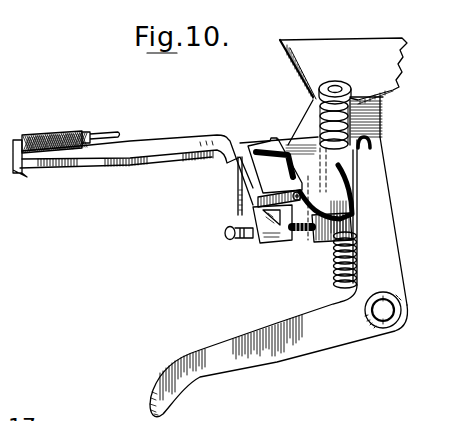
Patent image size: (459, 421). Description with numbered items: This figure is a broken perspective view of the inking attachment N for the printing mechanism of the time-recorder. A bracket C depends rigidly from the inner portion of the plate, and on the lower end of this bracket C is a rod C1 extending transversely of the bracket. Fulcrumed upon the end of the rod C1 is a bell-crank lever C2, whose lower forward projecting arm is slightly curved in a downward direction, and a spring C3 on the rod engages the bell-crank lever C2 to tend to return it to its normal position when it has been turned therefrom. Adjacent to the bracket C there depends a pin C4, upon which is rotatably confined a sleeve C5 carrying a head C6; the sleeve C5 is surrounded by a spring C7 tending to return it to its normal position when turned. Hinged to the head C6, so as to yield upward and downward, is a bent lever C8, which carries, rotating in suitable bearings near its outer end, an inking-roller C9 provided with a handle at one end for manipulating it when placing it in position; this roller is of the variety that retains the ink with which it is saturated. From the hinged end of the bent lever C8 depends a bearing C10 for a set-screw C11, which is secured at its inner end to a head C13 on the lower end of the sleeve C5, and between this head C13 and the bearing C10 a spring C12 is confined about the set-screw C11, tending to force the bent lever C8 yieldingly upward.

The bracket C is at (383, 139).
The rod C1 is at (388, 310).
The bell-crank lever C2 is at (396, 283).
The spring C3 is at (343, 270).
The pin C4 is at (334, 92).
The sleeve C5 is at (345, 146).
The head C6 is at (308, 173).
The spring C7 is at (322, 125).
The bent lever C8 is at (182, 140).
The inking-roller C9 is at (58, 132).
The bearing C10 is at (269, 242).
The set-screw C11 is at (226, 240).
The spring C12 is at (297, 236).
The head C13 is at (312, 242).
The inking attachment N is at (173, 213).